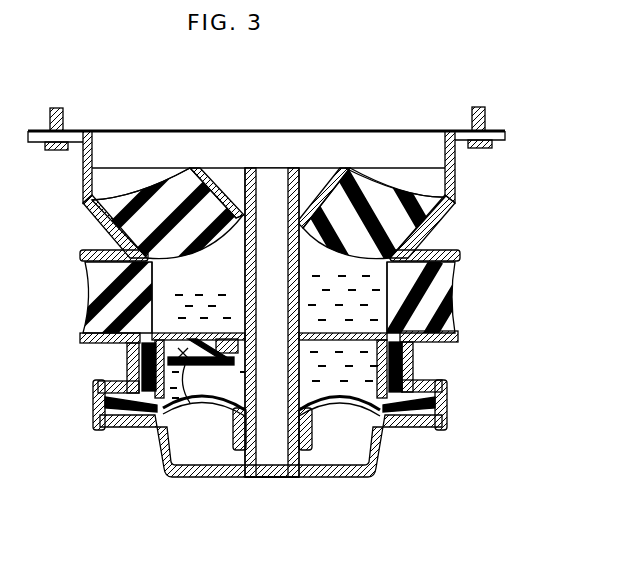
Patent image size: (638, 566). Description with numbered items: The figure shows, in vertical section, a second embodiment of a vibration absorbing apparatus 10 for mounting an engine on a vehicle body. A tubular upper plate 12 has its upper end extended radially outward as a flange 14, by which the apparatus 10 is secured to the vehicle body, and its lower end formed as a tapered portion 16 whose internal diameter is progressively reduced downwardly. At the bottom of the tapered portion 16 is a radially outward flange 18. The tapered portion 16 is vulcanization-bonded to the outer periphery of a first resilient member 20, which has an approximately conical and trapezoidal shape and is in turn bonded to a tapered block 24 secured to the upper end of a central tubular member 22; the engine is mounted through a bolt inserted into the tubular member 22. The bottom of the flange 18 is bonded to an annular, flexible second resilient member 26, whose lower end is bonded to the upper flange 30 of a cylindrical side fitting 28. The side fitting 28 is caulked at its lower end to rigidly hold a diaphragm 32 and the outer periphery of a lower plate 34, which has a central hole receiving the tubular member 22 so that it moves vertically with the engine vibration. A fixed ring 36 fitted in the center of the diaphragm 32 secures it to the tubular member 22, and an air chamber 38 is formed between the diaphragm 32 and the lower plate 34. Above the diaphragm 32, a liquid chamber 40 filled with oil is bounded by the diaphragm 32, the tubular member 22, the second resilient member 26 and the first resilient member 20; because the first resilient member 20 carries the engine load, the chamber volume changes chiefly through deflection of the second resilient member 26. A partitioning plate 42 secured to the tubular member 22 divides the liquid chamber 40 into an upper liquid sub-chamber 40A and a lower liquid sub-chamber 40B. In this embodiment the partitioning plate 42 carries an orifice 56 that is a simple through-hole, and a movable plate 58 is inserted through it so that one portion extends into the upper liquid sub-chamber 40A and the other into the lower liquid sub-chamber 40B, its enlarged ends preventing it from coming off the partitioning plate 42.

The vibration absorbing apparatus 10 is at (422, 118).
The upper plate 12 is at (457, 170).
The flange 14 is at (493, 129).
The tapered portion 16 is at (433, 213).
The flange 18 is at (443, 243).
The first resilient member 20 is at (362, 195).
The tubular member 22 is at (291, 168).
The tapered block 24 is at (340, 167).
The second resilient member 26 is at (427, 290).
The side fitting 28 is at (415, 356).
The upper flange 30 is at (457, 336).
The diaphragm 32 is at (163, 448).
The lower plate 34 is at (302, 478).
The fixed ring 36 is at (240, 474).
The air chamber 38 is at (343, 447).
The liquid chamber 40 is at (172, 297).
The upper liquid sub-chamber 40A is at (231, 288).
The lower liquid sub-chamber 40B is at (236, 388).
The partitioning plate 42 is at (305, 335).
The orifice 56 is at (367, 337).
The movable plate 58 is at (186, 403).